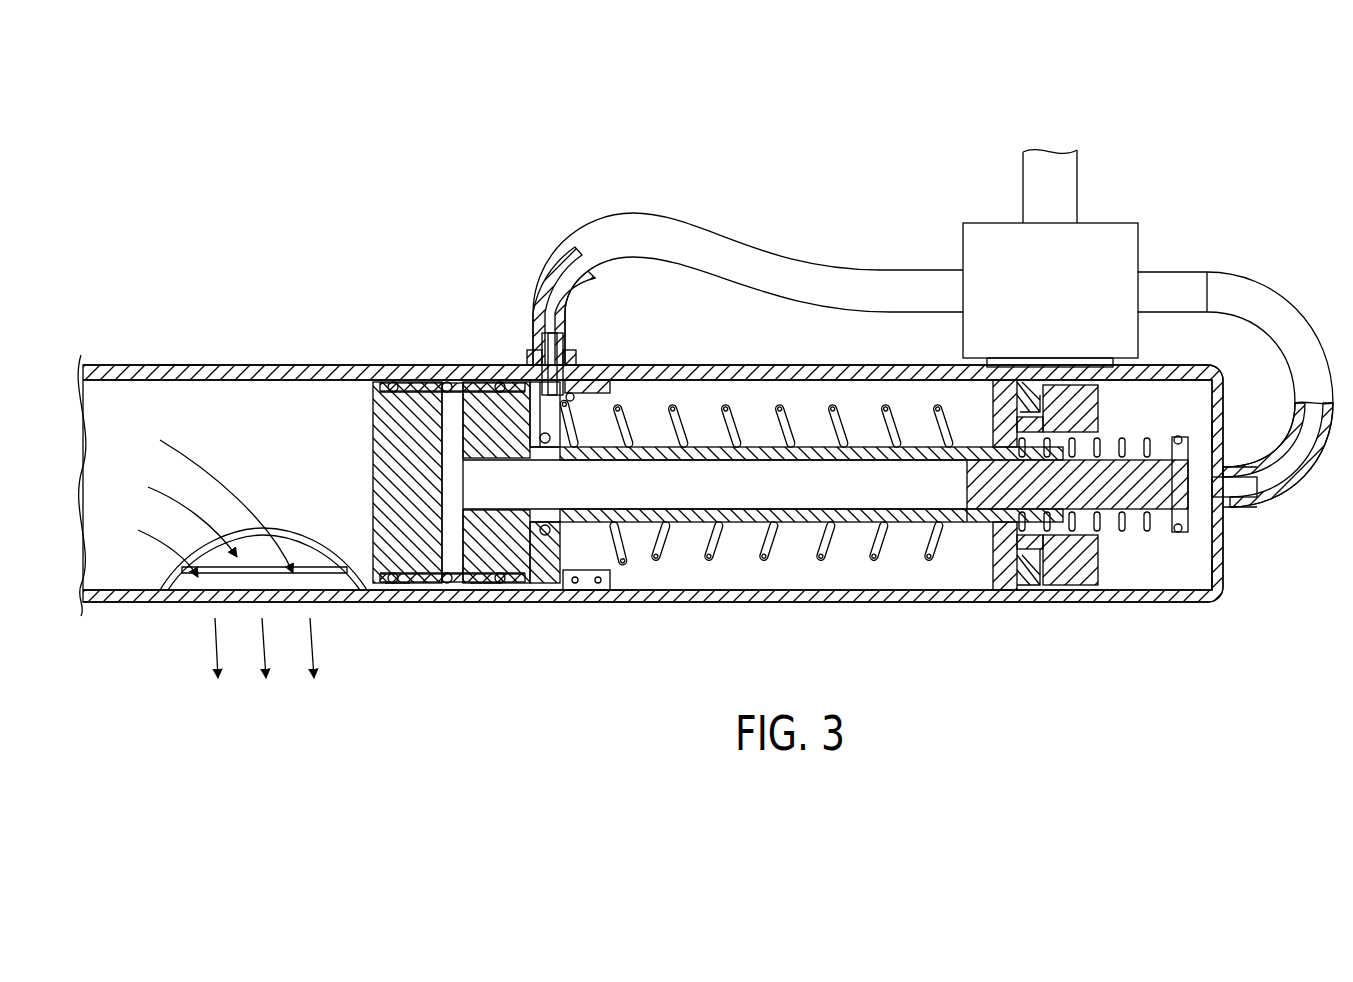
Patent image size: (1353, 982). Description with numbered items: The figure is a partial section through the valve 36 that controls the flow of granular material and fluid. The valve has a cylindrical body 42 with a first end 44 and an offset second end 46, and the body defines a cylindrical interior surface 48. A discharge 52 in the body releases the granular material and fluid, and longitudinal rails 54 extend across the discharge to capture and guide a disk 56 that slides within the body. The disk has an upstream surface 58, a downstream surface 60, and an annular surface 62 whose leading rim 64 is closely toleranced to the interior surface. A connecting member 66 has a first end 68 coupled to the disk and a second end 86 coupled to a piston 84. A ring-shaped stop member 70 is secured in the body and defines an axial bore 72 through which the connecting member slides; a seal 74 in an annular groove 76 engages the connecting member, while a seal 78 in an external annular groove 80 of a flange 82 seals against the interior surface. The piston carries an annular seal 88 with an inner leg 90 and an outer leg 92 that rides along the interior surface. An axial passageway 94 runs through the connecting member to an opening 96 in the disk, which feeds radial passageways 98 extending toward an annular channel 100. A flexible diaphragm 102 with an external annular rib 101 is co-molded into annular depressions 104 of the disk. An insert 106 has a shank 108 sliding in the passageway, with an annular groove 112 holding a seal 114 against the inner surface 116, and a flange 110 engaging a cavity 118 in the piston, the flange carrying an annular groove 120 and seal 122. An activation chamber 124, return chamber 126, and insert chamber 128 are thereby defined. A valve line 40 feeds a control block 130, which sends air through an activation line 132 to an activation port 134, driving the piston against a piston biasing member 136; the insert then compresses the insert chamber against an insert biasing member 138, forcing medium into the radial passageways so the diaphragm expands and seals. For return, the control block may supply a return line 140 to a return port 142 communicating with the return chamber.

The valve 36 is at (243, 92).
The valve line 40 is at (1078, 188).
The cylindrical body 42 is at (236, 364).
The first end 44 is at (176, 365).
The second end 46 is at (1207, 320).
The cylindrical interior surface 48 is at (224, 434).
The discharge 52 is at (191, 609).
The longitudinal rails 54 is at (306, 567).
The disk 56 is at (411, 482).
The upstream surface 58 is at (375, 466).
The downstream surface 60 is at (567, 584).
The annular surface 62 is at (522, 592).
The leading rim 64 is at (393, 586).
The connecting member 66 is at (775, 444).
The first end 68 is at (538, 520).
The stop member 70 is at (619, 382).
The axial bore 72 is at (579, 520).
The seal 74 is at (556, 452).
The annular groove 76 is at (583, 554).
The seal 78 is at (566, 380).
The external annular groove 80 is at (594, 388).
The flange 82 is at (612, 574).
The piston 84 is at (990, 413).
The second end 86 is at (1096, 561).
The annular seal 88 is at (997, 596).
The inner leg 90 is at (1073, 586).
The outer leg 92 is at (1040, 588).
The axial passageway 94 is at (764, 497).
The opening 96 is at (484, 497).
The radial passageways 98 is at (445, 450).
The annular channel 100 is at (482, 585).
The external annular rib 101 is at (447, 384).
The flexible diaphragm 102 is at (391, 382).
The annular depressions 104 is at (480, 383).
The insert 106 is at (1140, 526).
The shank 108 is at (967, 472).
The flange 110 is at (1168, 446).
The annular groove 112 is at (953, 460).
The seal 114 is at (978, 514).
The inner surface 116 is at (868, 462).
The cavity 118 is at (1100, 436).
The annular groove 120 is at (1224, 432).
The seal 122 is at (1182, 437).
The activation chamber 124 is at (1107, 406).
The return chamber 126 is at (884, 577).
The insert chamber 128 is at (697, 497).
The control block 130 is at (1029, 302).
The activation line 132 is at (1297, 308).
The activation port 134 is at (1236, 510).
The piston biasing member 136 is at (781, 418).
The insert biasing member 138 is at (1216, 591).
The return line 140 is at (590, 243).
The return port 142 is at (614, 404).